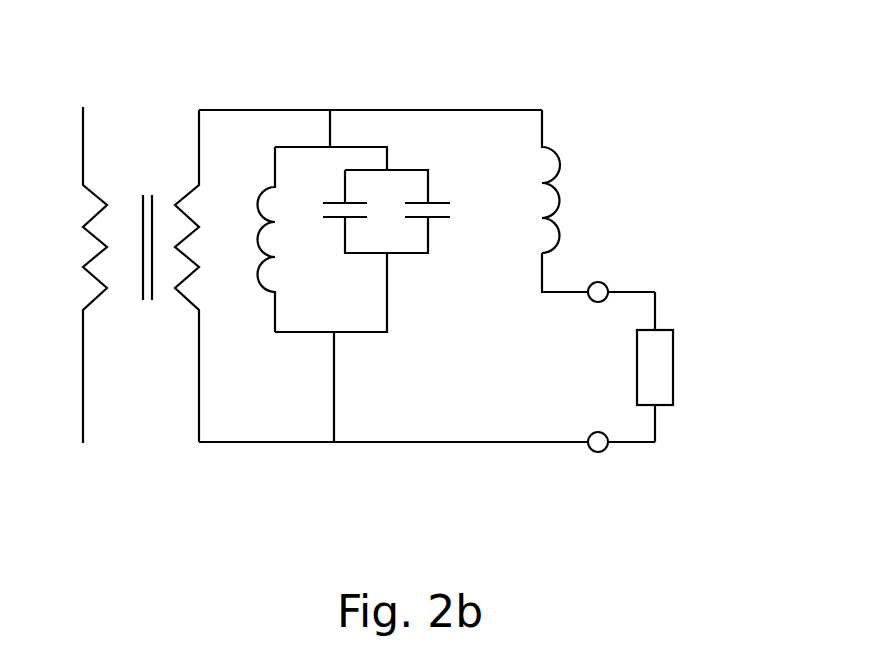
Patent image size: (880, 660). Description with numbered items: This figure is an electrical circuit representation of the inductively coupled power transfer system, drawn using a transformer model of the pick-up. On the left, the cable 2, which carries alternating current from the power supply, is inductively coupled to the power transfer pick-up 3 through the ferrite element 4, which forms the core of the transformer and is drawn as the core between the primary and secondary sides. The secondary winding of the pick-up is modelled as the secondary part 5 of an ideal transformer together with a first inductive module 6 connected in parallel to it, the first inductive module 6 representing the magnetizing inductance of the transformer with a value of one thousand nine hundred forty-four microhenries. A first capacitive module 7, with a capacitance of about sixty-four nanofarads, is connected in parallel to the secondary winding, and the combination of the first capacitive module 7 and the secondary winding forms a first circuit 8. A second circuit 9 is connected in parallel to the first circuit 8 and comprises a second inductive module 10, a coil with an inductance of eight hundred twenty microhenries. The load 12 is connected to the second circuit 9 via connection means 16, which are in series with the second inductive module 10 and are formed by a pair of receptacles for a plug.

The cable 2 is at (83, 405).
The power transfer pick-up 3 is at (260, 455).
The ferrite element 4 is at (145, 193).
The secondary part of the ideal transformer 5 is at (190, 190).
The first inductive module 6 is at (263, 190).
The first capacitive module 7 is at (404, 170).
The first circuit 8 is at (355, 333).
The second circuit 9 is at (568, 257).
The second inductive module 10 is at (562, 165).
The load 12 is at (673, 362).
The connection means 16 is at (598, 283).